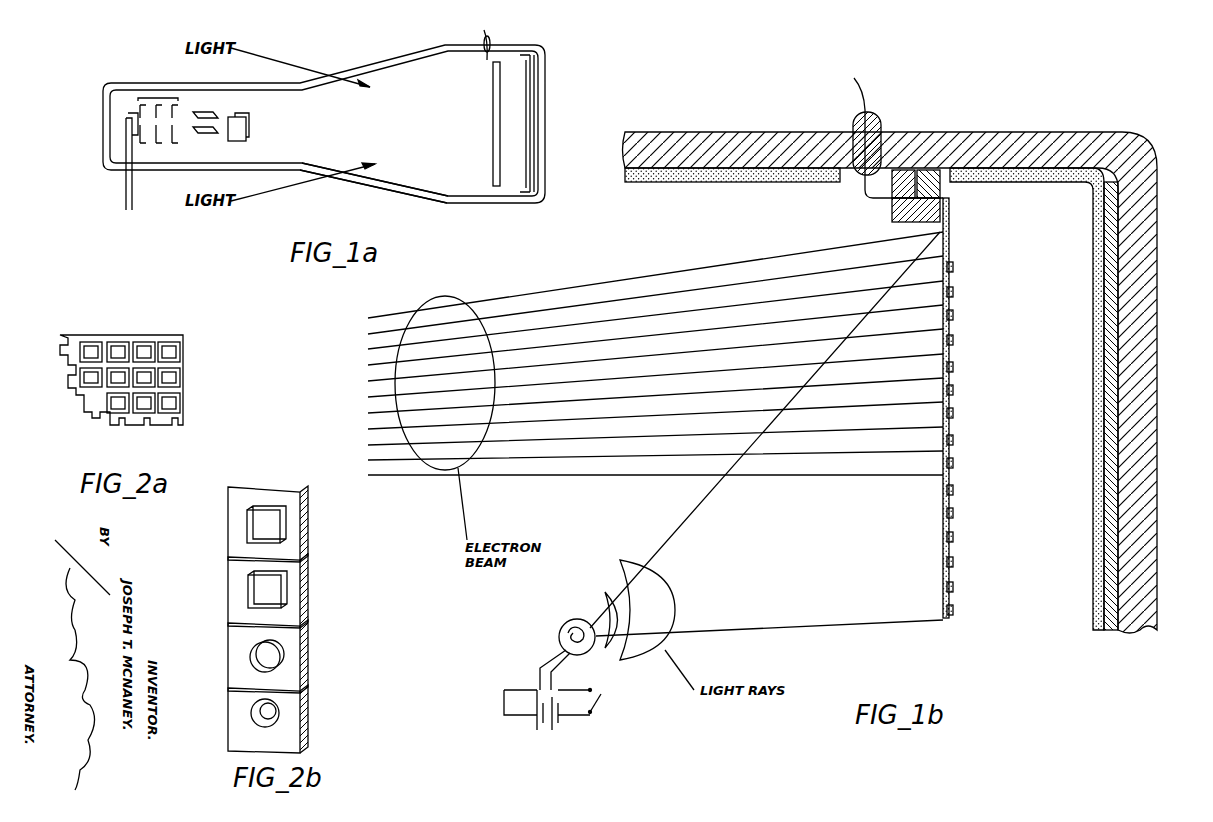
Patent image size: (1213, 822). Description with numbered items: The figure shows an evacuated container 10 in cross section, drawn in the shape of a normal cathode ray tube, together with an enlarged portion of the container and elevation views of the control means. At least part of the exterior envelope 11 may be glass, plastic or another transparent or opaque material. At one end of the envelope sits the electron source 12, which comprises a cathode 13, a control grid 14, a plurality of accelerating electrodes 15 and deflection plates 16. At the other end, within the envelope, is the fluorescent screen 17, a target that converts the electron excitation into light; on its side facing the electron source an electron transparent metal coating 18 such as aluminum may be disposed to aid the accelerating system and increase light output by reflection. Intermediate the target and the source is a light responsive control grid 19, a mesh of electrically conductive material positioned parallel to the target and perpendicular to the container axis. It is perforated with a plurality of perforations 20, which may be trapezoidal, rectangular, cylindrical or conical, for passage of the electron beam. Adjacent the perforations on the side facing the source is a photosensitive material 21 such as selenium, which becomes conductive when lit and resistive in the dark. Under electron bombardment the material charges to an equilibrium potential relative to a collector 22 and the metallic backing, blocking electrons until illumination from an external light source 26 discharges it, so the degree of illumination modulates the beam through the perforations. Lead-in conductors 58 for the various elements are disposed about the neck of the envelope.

In FIG. 1A, the evacuated container 10 is at (356, 206).
In FIG. 1A, the exterior envelope 11 is at (372, 62).
In FIG. 1B, the exterior envelope 11 is at (1058, 132).
In FIG. 1A, the electron source 12 is at (176, 160).
In FIG. 1A, the cathode 13 is at (126, 123).
In FIG. 1A, the control grid 14 is at (128, 114).
In FIG. 1A, the accelerating electrodes 15 is at (158, 98).
In FIG. 1A, the deflection plates 16 is at (220, 112).
In FIG. 1A, the fluorescent screen 17 is at (536, 92).
In FIG. 1B, the fluorescent screen 17 is at (1118, 505).
In FIG. 1A, the electron transparent metal coating 18 is at (530, 97).
In FIG. 1B, the electron transparent metal coating 18 is at (1093, 536).
In FIG. 1A, the control grid 19 is at (500, 140).
In FIG. 2A, the control grid 19 is at (100, 335).
In FIG. 1B, the control grid 19 is at (950, 220).
In FIG. 2A, the perforations 20 is at (170, 377).
In FIG. 2B, the perforations 20 is at (275, 713).
In FIG. 1B, the perforations 20 is at (953, 513).
In FIG. 2B, the photosensitive material 21 is at (258, 710).
In FIG. 1B, the photosensitive material 21 is at (945, 537).
In FIG. 1A, the collector 22 is at (420, 186).
In FIG. 1B, the collector 22 is at (765, 183).
In FIG. 1B, the external light source 26 is at (650, 699).
In FIG. 1A, the lead-in conductors 58 is at (487, 45).
In FIG. 1B, the lead-in conductors 58 is at (880, 116).